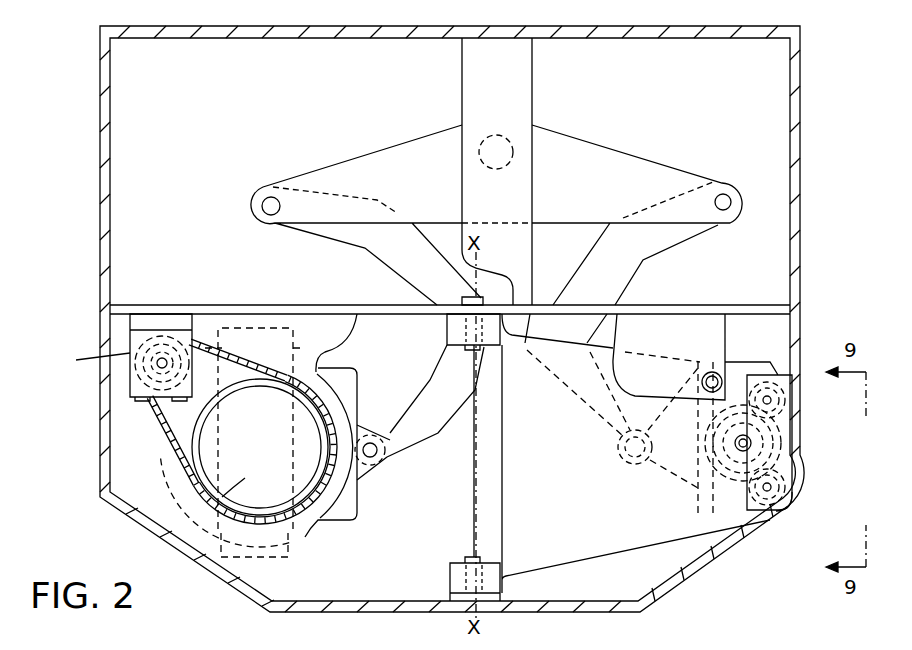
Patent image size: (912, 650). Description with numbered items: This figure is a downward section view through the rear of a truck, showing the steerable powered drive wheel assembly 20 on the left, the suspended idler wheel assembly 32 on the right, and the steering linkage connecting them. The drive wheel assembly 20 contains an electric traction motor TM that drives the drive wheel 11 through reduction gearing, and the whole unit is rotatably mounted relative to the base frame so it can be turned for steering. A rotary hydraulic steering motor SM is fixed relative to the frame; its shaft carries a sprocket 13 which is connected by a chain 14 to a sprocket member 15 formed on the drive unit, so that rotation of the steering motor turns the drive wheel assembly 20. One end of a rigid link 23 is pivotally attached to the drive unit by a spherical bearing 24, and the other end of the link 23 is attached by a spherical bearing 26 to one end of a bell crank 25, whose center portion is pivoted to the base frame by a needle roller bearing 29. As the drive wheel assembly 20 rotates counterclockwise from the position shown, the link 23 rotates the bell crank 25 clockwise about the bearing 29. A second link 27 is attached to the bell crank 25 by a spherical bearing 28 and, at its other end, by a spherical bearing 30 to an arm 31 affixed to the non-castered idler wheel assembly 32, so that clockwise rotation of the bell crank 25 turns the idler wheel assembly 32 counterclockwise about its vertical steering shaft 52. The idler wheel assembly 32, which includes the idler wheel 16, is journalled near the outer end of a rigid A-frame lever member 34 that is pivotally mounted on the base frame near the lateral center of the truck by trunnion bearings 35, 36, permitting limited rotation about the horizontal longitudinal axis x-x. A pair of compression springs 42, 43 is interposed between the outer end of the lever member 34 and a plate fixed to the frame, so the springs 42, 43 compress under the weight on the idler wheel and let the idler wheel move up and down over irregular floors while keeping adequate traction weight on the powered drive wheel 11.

The drive wheel 11 is at (245, 560).
The sprocket 13 is at (175, 328).
The chain 14 is at (148, 415).
The sprocket member 15 is at (238, 388).
The idler wheel 16 is at (740, 542).
The steerable powered drive wheel assembly 20 is at (148, 478).
The rigid link 23 is at (430, 372).
The spherical bearing 24 is at (395, 445).
The bell crank 25 is at (388, 146).
The spherical bearing 26 is at (258, 208).
The link 27 is at (682, 248).
The spherical bearing 28 is at (728, 192).
The needle roller bearing 29 is at (503, 135).
The spherical bearing 30 is at (612, 458).
The arm 31 is at (640, 470).
The idler wheel assembly 32 is at (814, 405).
The A-frame lever member 34 is at (575, 555).
The trunnion bearing 35 is at (448, 568).
The trunnion bearing 36 is at (447, 333).
The compression spring 42 is at (757, 375).
The compression spring 43 is at (792, 510).
The steering shaft 52 is at (735, 444).